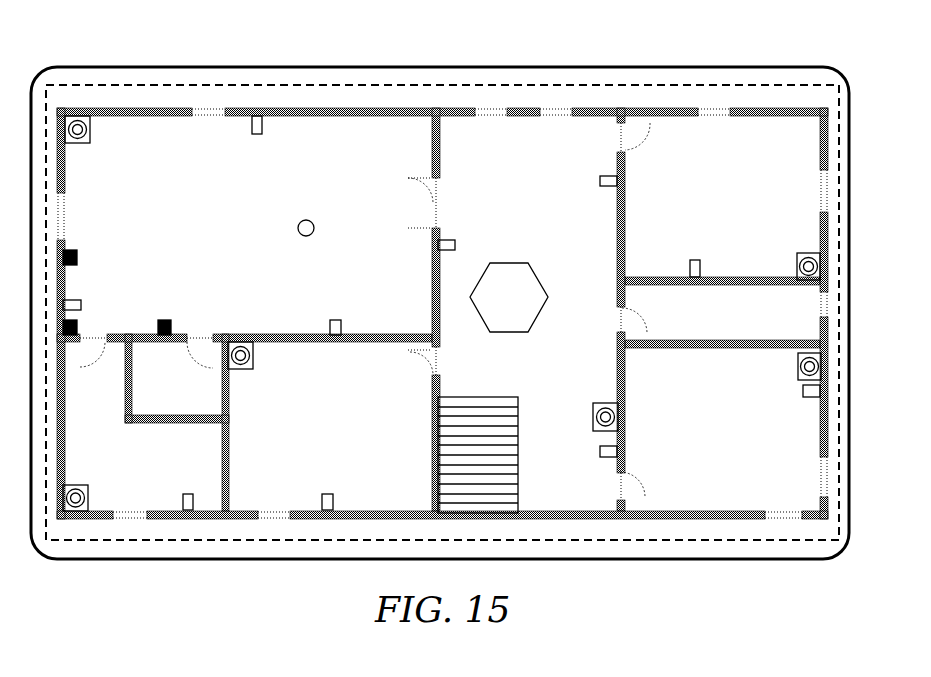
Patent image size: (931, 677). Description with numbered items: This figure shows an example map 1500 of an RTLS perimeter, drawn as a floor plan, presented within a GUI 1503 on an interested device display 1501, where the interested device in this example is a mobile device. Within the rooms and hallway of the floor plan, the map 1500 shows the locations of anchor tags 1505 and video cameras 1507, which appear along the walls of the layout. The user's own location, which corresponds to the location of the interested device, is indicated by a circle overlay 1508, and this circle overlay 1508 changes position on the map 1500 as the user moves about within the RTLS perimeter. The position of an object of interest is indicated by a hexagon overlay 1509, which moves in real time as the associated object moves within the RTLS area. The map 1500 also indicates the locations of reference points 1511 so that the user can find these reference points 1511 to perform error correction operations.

The map 1500 is at (670, 108).
The interested device display 1501 is at (583, 68).
The GUI 1503 is at (630, 85).
The anchor tags 1505 is at (263, 123).
The video cameras 1507 is at (90, 133).
The circle overlay 1508 is at (313, 222).
The hexagon overlay 1509 is at (536, 272).
The reference points 1511 is at (77, 254).